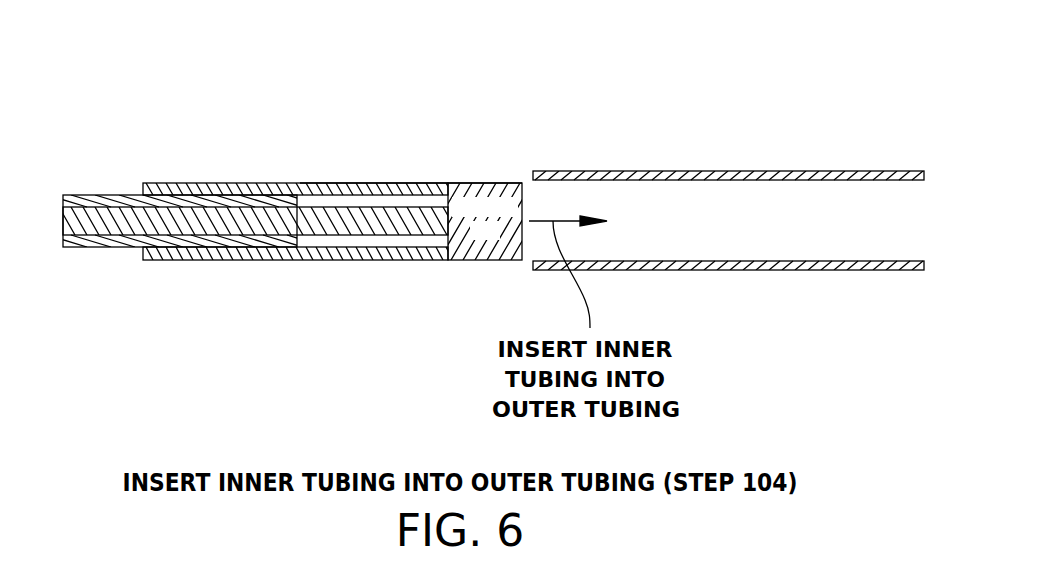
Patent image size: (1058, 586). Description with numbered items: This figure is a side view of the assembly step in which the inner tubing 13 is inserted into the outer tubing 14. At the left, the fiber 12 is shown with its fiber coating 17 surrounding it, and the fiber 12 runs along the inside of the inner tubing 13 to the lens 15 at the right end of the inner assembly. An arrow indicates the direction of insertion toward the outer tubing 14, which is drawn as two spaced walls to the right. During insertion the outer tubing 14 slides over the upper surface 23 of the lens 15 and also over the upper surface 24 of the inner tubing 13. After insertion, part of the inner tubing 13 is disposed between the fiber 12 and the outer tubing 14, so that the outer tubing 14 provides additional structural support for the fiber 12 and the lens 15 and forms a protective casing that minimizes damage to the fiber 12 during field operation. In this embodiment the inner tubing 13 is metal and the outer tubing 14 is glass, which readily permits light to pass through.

The fiber 12 is at (173, 223).
The inner tubing 13 is at (321, 190).
The outer tubing 14 is at (787, 270).
The lens 15 is at (468, 244).
The fiber coating 17 is at (121, 201).
The upper surface of the lens 23 is at (492, 185).
The upper surface of the inner tubing 24 is at (413, 185).